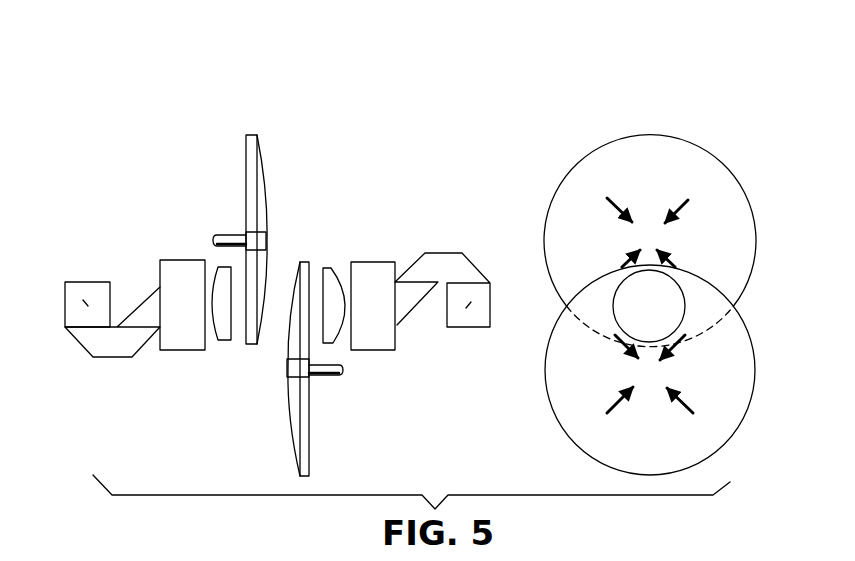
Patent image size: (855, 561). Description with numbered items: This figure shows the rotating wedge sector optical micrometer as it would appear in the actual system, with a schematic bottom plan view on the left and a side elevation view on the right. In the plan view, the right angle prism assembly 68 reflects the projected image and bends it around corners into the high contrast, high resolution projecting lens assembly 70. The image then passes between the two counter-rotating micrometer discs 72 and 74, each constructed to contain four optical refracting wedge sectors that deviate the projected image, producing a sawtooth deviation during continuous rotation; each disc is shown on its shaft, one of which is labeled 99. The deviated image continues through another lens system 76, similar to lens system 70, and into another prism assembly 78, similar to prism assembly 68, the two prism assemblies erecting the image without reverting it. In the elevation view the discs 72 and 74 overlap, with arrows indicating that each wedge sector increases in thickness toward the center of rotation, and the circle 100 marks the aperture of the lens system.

The right angle prism assembly 68 is at (370, 265).
The projecting lens assembly 70 is at (330, 273).
The micrometer disc 72 is at (293, 428).
The micrometer disc 74 is at (252, 178).
The lens system 76 is at (224, 333).
The prism assembly 78 is at (101, 287).
The shaft 99 is at (322, 373).
The circle 100 is at (682, 287).